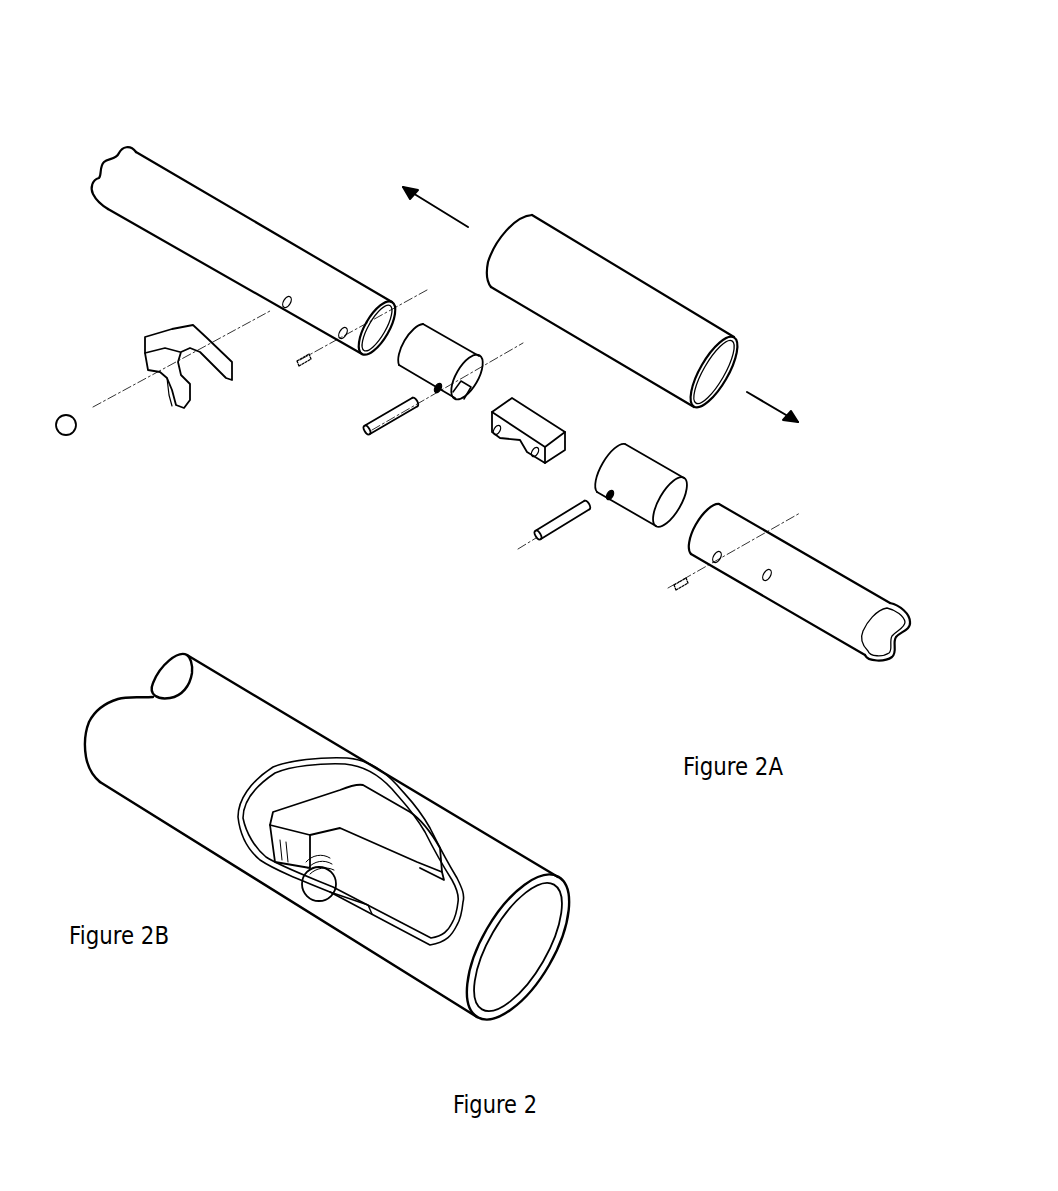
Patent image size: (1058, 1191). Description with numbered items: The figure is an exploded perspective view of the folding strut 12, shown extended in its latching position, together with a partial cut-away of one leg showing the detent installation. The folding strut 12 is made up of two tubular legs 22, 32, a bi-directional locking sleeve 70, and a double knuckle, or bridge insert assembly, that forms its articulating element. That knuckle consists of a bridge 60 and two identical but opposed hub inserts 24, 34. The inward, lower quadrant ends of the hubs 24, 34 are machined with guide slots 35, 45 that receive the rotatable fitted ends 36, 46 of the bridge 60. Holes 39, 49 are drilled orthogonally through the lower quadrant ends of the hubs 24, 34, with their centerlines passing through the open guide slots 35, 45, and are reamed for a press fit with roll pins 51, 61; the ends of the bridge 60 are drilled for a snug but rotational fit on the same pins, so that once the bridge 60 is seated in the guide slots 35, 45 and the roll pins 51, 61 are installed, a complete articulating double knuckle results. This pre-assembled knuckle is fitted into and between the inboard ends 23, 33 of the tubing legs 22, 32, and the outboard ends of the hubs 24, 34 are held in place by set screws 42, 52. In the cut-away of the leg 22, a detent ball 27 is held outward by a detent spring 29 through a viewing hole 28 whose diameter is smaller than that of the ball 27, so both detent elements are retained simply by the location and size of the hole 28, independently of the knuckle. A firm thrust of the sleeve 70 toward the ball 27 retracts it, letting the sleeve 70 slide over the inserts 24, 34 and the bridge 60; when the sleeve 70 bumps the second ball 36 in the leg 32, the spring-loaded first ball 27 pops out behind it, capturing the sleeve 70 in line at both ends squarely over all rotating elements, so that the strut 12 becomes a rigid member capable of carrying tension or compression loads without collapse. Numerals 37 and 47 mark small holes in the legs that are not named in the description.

In FIG. 2A, the folding strut 12 is at (487, 157).
In FIG. 2A, the tubular leg 22 is at (254, 274).
In FIG. 2B, the tubular leg 22 is at (500, 869).
In FIG. 2A, the inboard end of leg 22 23 is at (388, 302).
In FIG. 2A, the hub insert 24 is at (369, 426).
In FIG. 2A, the detent ball 27 is at (72, 434).
In FIG. 2B, the detent ball 27 is at (318, 890).
In FIG. 2A, the viewing hole 28 is at (275, 305).
In FIG. 2A, the detent spring 29 is at (165, 372).
In FIG. 2B, the detent spring 29 is at (363, 812).
In FIG. 2A, the tubular leg 32 is at (784, 549).
In FIG. 2A, the inboard end of leg 32 33 is at (712, 500).
In FIG. 2A, the hub insert 34 is at (612, 493).
In FIG. 2A, the guide slot 35 is at (453, 400).
In FIG. 2A, the fitted end of bridge / second ball 36 is at (500, 442).
In FIG. 2A, the hole in first tube 37 is at (343, 342).
In FIG. 2A, the hole 39 is at (437, 396).
In FIG. 2A, the set screw 42 is at (298, 368).
In FIG. 2A, the guide slot 45 is at (602, 473).
In FIG. 2A, the fitted end of bridge 46 is at (540, 463).
In FIG. 2A, the hole in second tube 47 is at (714, 568).
In FIG. 2A, the hole 49 is at (578, 538).
In FIG. 2A, the roll pin 51 is at (372, 436).
In FIG. 2A, the set screw 52 is at (667, 593).
In FIG. 2A, the bridge 60 is at (614, 550).
In FIG. 2A, the roll pin 61 is at (541, 543).
In FIG. 2A, the locking sleeve 70 is at (560, 268).